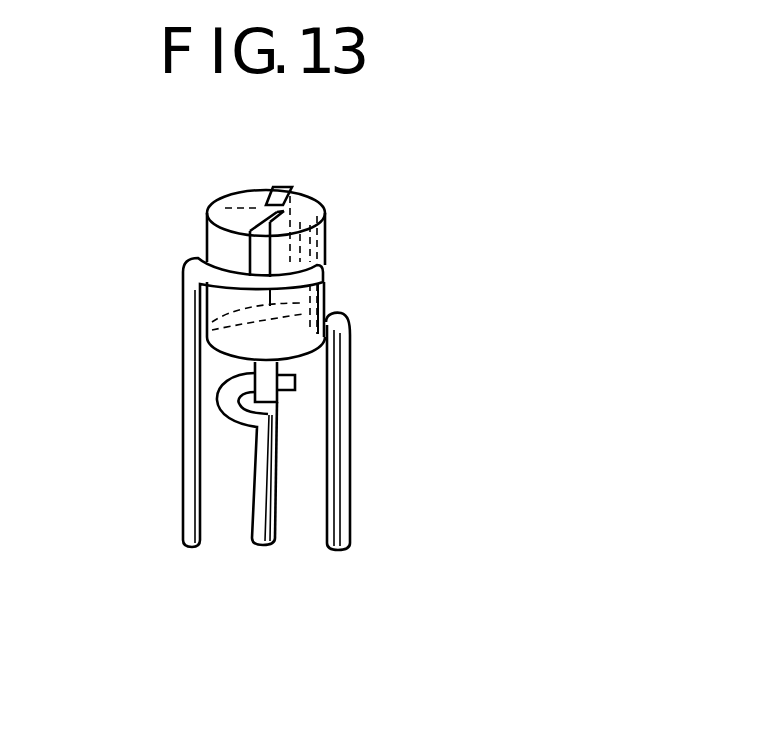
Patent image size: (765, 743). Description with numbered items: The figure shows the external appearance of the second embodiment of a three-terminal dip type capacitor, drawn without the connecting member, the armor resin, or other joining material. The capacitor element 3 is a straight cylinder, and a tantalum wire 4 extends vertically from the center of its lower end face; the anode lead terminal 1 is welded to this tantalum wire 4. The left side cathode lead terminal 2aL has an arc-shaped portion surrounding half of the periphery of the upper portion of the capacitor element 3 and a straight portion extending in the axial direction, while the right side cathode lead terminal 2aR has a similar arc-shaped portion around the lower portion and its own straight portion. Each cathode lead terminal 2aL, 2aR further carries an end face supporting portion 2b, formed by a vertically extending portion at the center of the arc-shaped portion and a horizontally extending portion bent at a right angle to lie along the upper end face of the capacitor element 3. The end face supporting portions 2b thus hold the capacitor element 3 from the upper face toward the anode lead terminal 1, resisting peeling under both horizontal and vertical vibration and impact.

The anode lead terminal 1 is at (259, 547).
The left side cathode lead terminal 2aL is at (183, 300).
The right side cathode lead terminal 2aR is at (347, 325).
The end face supporting portion 2b is at (246, 210).
The capacitor element 3 is at (304, 207).
The tantalum wire 4 is at (268, 383).